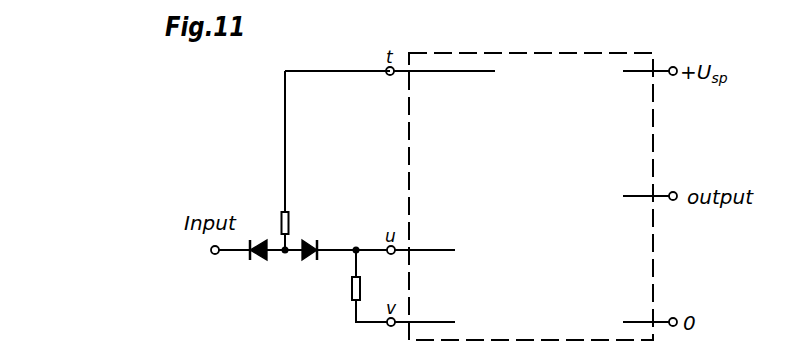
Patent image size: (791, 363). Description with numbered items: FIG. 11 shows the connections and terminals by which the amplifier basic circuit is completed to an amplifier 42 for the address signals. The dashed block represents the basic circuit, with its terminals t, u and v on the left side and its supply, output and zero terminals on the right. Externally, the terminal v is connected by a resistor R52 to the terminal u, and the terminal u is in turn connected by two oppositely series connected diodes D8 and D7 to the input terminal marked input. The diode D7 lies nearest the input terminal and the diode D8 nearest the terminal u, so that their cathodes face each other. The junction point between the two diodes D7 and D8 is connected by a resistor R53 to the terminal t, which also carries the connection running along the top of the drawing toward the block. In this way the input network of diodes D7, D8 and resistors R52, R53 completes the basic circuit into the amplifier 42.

The amplifier 42 is at (308, 314).
The diode D7 is at (255, 267).
The diode D8 is at (303, 267).
The resistor R53 is at (336, 160).
The resistor R52 is at (354, 286).